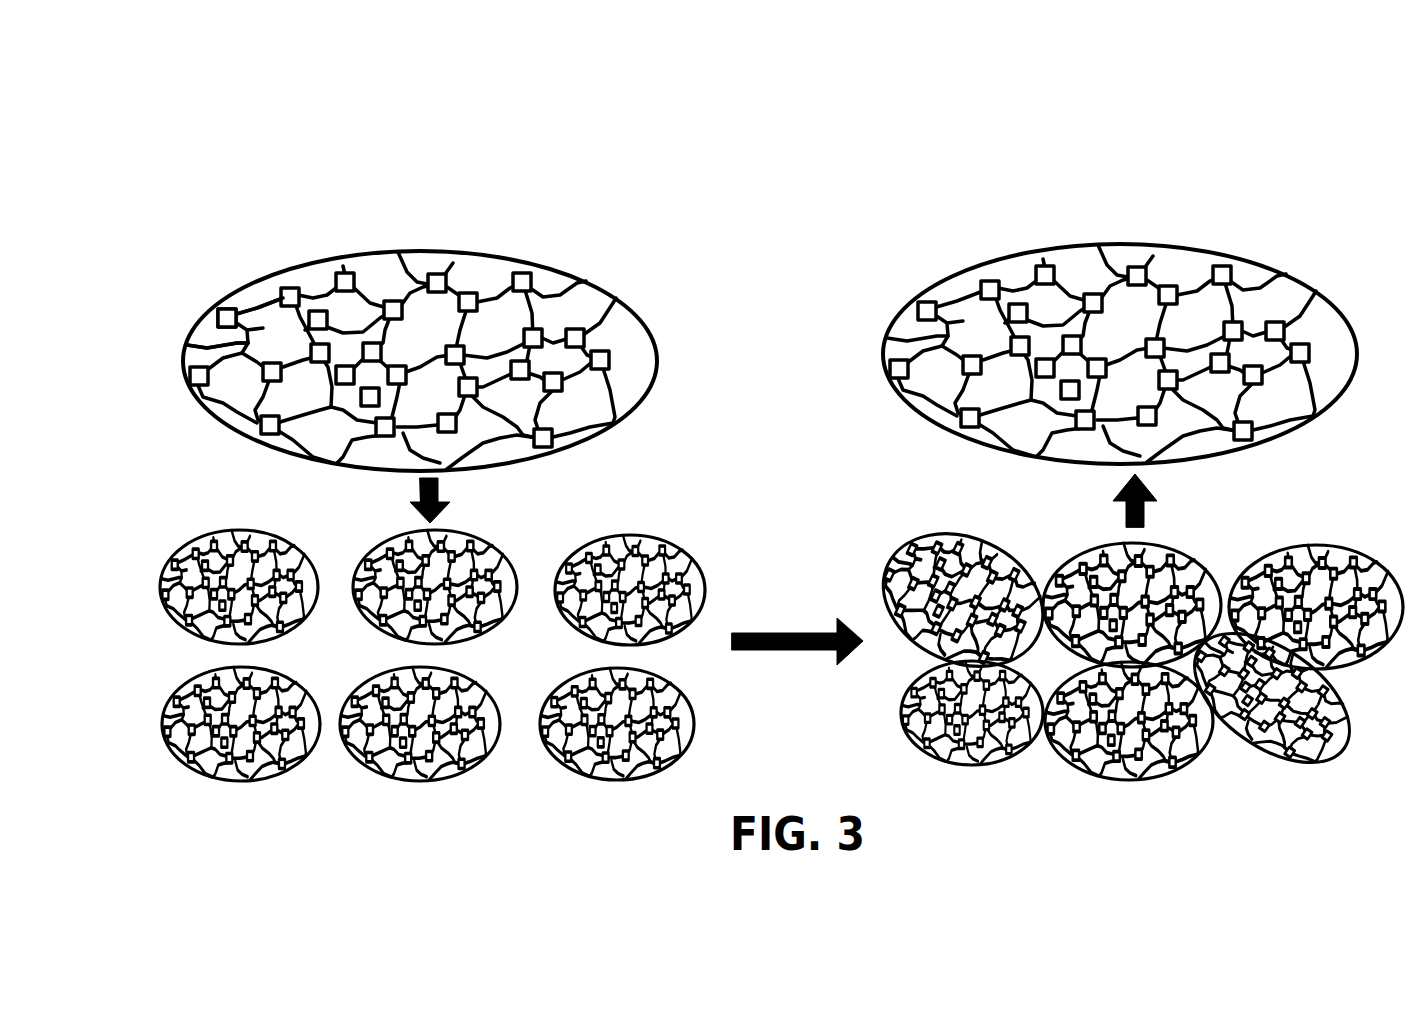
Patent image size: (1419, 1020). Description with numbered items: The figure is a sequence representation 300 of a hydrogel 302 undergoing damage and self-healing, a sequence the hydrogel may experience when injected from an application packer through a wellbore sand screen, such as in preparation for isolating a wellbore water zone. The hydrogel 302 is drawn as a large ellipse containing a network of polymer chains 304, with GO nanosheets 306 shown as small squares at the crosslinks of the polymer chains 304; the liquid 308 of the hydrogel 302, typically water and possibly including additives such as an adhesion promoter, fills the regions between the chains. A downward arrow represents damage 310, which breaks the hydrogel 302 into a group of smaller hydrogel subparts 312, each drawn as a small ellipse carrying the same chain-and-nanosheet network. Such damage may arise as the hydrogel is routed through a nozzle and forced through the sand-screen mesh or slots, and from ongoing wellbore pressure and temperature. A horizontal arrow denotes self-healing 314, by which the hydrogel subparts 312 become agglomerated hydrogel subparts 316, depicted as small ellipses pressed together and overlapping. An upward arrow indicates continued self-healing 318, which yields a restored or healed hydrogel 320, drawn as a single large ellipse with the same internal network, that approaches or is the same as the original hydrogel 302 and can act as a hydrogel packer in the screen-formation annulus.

The sequence representation 300 is at (240, 173).
The hydrogel 302 is at (444, 252).
The polymer chains 304 is at (266, 300).
The GO nanosheets 306 is at (225, 309).
The liquid 308 is at (203, 350).
The damage 310 is at (417, 495).
The hydrogel subparts 312 is at (192, 540).
The self-healing 314 is at (802, 652).
The agglomerated hydrogel subparts 316 is at (898, 548).
The continued self-healing 318 is at (1150, 513).
The healed hydrogel 320 is at (1147, 243).